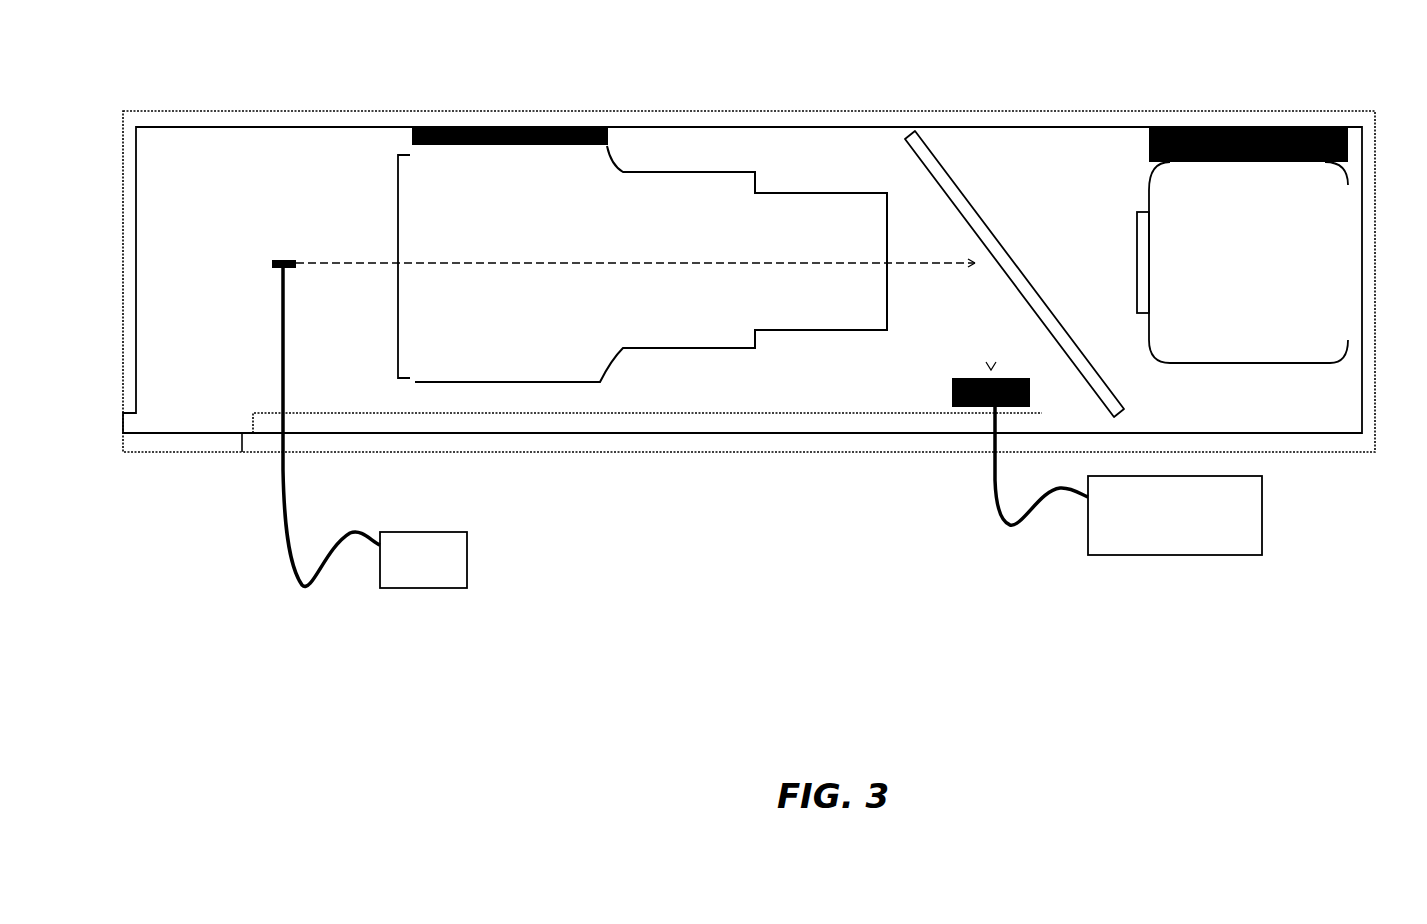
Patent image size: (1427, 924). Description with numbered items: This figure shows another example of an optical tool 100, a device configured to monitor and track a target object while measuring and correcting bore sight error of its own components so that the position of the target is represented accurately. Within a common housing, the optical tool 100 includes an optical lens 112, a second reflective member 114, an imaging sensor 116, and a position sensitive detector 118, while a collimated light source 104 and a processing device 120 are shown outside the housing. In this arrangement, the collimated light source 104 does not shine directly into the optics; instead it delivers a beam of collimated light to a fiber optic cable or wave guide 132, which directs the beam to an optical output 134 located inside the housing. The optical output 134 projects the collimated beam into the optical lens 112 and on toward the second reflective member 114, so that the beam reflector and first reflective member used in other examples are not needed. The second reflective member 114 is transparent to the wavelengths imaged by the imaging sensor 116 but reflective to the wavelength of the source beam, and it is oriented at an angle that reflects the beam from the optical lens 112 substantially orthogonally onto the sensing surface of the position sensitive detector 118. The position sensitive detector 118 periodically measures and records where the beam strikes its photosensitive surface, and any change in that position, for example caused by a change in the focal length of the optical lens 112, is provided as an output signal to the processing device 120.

The optical tool 100 is at (1250, 712).
The collimated light source 104 is at (443, 585).
The optical lens 112 is at (670, 178).
The second reflective member 114 is at (975, 212).
The imaging sensor 116 is at (1348, 182).
The position sensitive detector 118 is at (1005, 412).
The processing device 120 is at (1167, 555).
The wave guide 132 is at (286, 320).
The optical output 134 is at (286, 258).